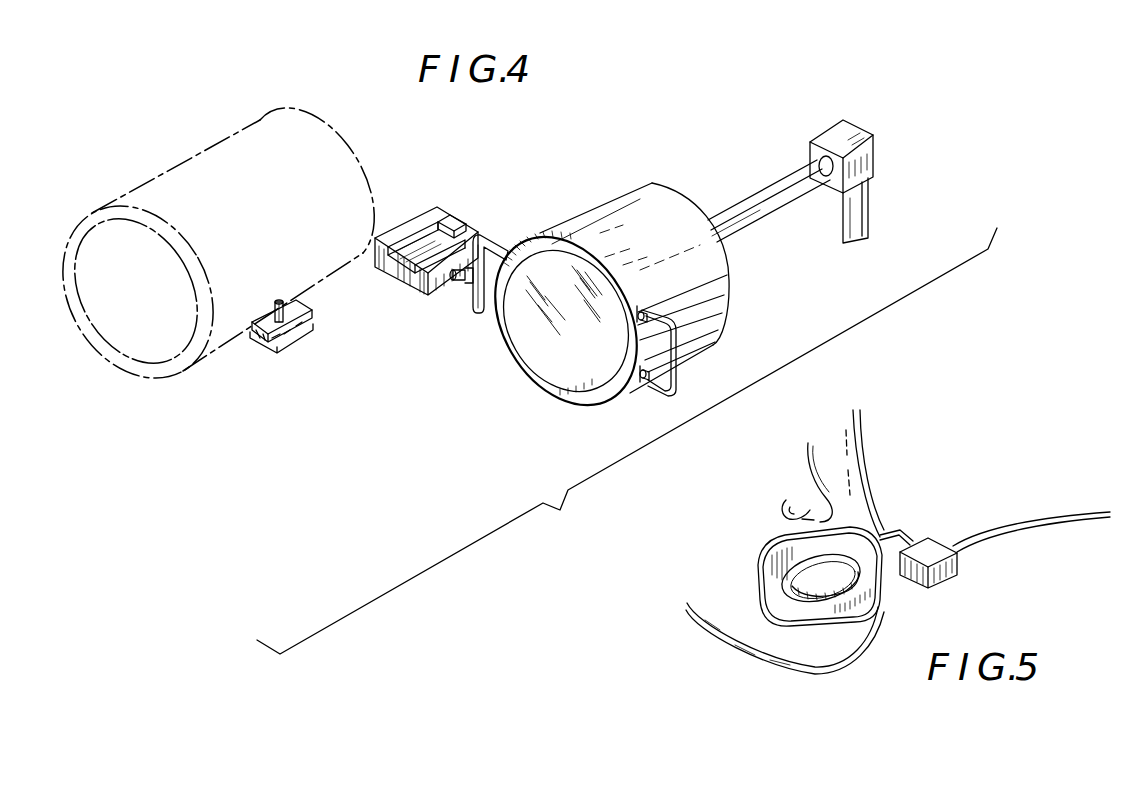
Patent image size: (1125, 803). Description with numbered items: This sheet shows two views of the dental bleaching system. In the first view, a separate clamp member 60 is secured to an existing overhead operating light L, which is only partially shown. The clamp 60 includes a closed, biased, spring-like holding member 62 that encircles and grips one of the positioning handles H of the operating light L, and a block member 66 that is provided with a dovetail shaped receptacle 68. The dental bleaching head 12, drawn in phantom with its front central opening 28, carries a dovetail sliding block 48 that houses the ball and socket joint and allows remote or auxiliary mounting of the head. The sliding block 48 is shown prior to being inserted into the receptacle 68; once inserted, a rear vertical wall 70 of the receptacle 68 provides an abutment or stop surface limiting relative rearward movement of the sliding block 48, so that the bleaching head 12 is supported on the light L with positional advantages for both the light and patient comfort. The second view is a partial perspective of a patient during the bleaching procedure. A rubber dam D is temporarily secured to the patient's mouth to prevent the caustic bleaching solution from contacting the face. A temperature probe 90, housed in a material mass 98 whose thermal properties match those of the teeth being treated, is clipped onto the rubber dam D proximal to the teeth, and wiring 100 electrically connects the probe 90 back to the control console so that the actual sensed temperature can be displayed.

In FIG. 4, the bleaching head 12 is at (278, 245).
In FIG. 4, the front central opening 28 is at (117, 355).
In FIG. 4, the dovetail sliding block 48 is at (260, 338).
In FIG. 4, the clamp member 60 is at (444, 242).
In FIG. 4, the spring-like holding member 62 is at (470, 284).
In FIG. 4, the block member 66 is at (446, 230).
In FIG. 4, the dovetail shaped receptacle 68 is at (400, 268).
In FIG. 4, the rear vertical wall 70 is at (456, 226).
In FIG. 4, the positioning handle H is at (500, 250).
In FIG. 4, the overhead operating light L is at (653, 202).
In FIG. 5, the rubber dam D is at (758, 585).
In FIG. 5, the temperature probe 90 is at (927, 540).
In FIG. 5, the material mass 98 is at (947, 577).
In FIG. 5, the wiring 100 is at (1028, 521).